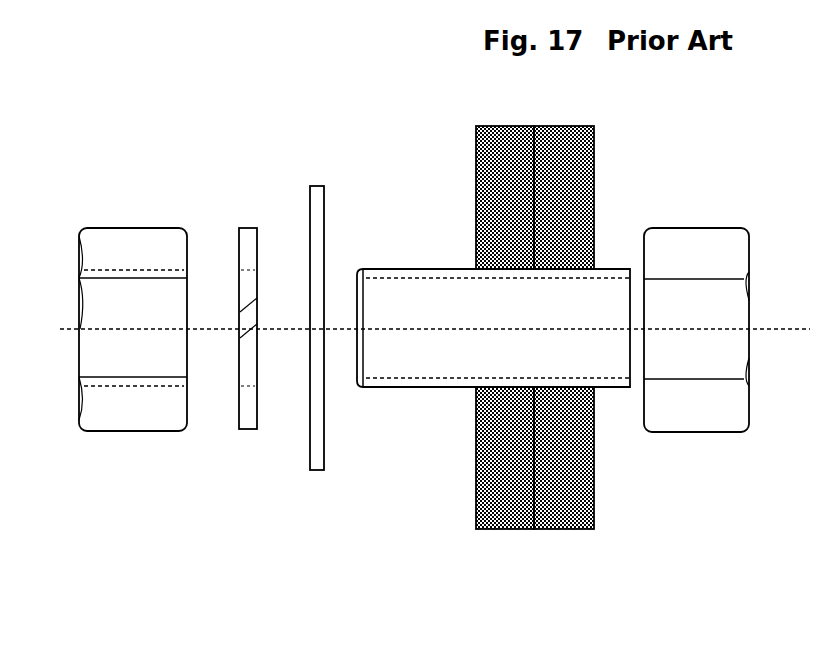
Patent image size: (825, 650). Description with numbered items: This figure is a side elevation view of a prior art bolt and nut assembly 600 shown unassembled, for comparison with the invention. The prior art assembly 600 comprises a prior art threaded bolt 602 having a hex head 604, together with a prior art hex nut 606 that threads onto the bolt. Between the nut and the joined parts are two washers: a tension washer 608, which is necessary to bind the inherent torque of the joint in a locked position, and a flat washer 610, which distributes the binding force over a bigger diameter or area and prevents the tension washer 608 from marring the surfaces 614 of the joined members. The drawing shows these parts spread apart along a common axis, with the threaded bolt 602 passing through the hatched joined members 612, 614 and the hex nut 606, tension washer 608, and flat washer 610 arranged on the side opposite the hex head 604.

The prior art bolt and nut assembly 600 is at (562, 603).
The prior art threaded bolt 602 is at (575, 348).
The hex head 604 is at (690, 228).
The prior art hex nut 606 is at (137, 433).
The tension washer 608 is at (243, 432).
The flat washer 610 is at (318, 477).
The second joined member 612 is at (567, 180).
The surfaces 614 is at (490, 193).